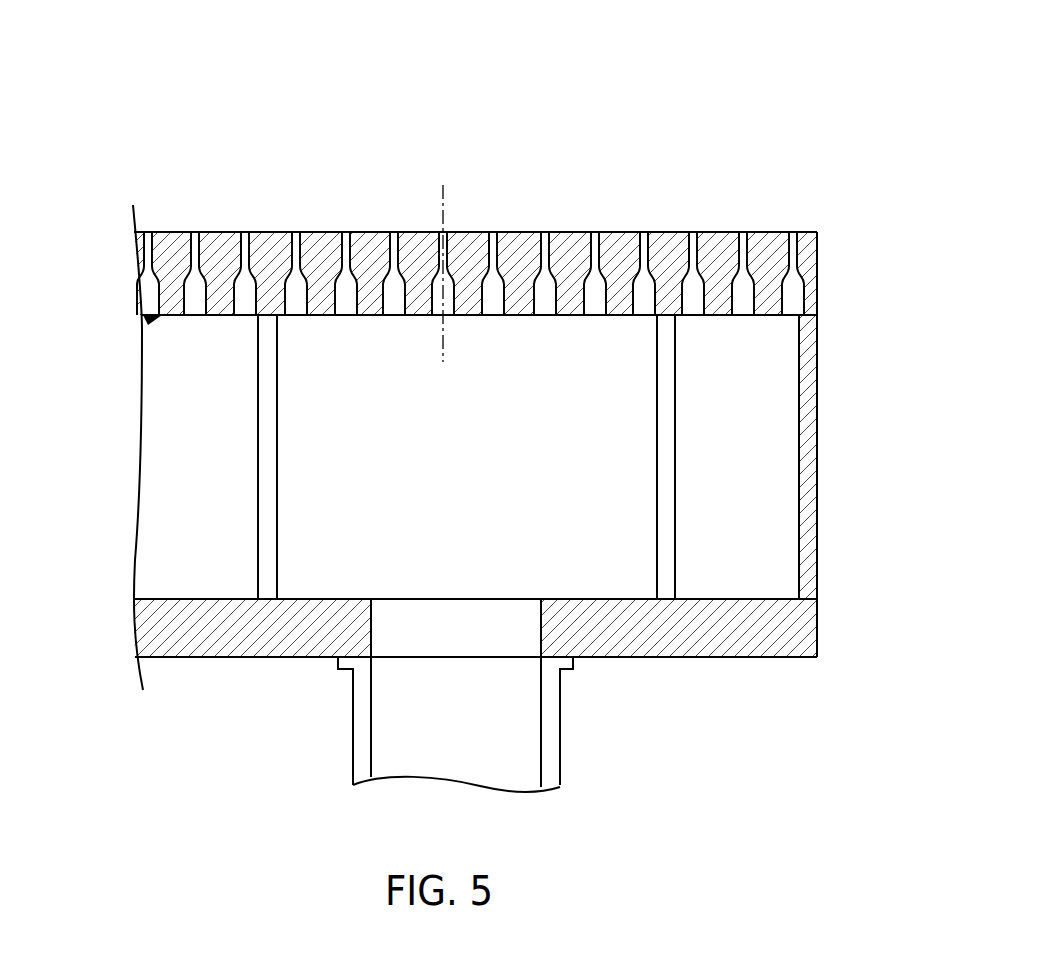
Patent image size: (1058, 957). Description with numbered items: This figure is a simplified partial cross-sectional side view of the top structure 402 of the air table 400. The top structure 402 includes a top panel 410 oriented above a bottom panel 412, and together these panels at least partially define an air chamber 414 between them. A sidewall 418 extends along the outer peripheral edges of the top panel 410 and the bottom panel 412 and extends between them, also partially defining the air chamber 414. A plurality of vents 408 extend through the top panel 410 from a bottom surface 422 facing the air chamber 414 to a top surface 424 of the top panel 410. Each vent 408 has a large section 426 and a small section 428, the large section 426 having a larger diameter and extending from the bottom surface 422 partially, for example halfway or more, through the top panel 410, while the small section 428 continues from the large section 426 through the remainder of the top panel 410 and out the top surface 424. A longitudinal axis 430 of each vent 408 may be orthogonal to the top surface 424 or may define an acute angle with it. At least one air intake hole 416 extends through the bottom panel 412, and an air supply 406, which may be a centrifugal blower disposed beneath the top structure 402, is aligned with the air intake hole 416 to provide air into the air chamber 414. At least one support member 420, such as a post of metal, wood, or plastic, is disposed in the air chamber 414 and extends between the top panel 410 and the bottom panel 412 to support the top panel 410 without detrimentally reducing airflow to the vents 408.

The air table 400 is at (425, 116).
The top structure 402 is at (847, 208).
The air supply 406 is at (547, 757).
The vents 408 is at (148, 233).
The top panel 410 is at (812, 245).
The bottom panel 412 is at (807, 643).
The air chamber 414 is at (175, 372).
The air intake hole 416 is at (408, 659).
The sidewall 418 is at (808, 397).
The support member 420 is at (272, 545).
The bottom surface 422 is at (152, 320).
The top surface 424 is at (533, 232).
The large section 426 is at (800, 298).
The small section 428 is at (790, 266).
The longitudinal axis 430 is at (441, 166).